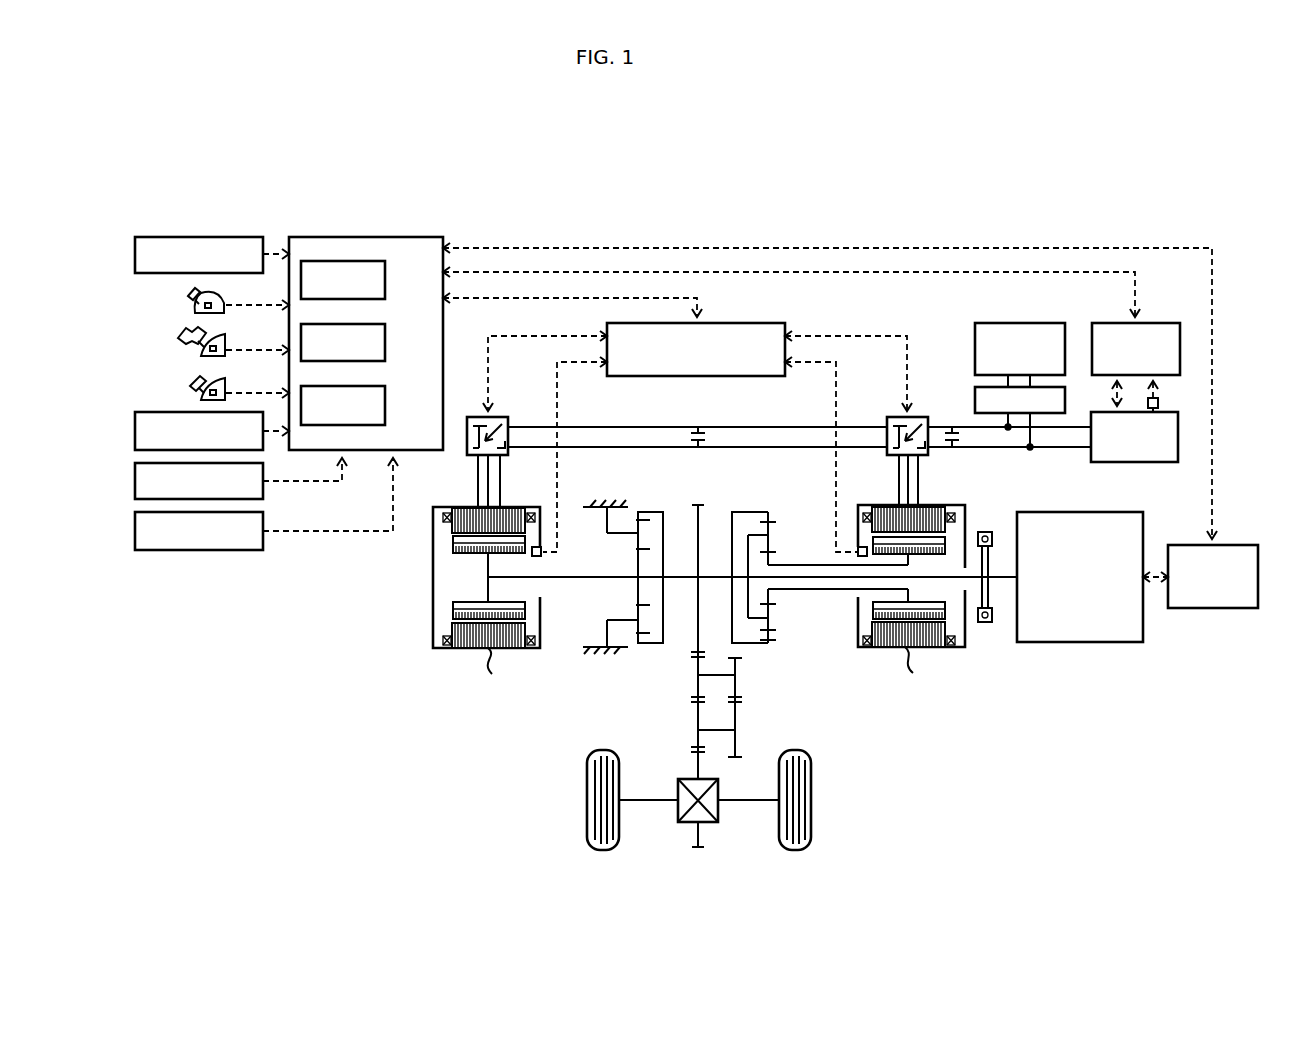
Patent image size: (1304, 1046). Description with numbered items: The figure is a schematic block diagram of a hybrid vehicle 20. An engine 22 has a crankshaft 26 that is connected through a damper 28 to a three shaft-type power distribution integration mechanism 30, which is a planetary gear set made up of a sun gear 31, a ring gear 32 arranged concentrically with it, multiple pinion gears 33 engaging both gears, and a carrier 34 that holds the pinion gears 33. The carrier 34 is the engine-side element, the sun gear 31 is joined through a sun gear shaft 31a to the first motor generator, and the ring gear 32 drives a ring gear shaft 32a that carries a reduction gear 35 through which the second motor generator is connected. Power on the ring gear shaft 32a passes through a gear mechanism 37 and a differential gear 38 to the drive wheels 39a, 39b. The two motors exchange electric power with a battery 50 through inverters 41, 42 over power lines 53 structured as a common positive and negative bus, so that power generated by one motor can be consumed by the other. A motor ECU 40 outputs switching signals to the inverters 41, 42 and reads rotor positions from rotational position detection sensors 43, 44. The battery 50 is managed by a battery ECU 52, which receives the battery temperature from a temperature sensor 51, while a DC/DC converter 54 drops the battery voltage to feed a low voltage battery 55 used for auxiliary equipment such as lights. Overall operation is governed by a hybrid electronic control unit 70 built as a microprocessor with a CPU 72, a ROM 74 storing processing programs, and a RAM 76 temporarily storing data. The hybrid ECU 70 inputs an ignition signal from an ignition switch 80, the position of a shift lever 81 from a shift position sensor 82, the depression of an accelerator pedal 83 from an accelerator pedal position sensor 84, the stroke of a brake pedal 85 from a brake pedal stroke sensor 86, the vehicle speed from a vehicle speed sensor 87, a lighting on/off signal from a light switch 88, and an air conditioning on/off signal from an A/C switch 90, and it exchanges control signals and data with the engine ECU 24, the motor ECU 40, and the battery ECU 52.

The hybrid vehicle 20 is at (934, 210).
The engine 22 is at (1118, 642).
The engine ECU 24 is at (1248, 545).
The crankshaft 26 is at (1003, 577).
The damper 28 is at (984, 622).
The power distribution integration mechanism 30 is at (820, 569).
The sun gear 31 is at (770, 602).
The sun gear shaft 31a is at (782, 565).
The ring gear 32 is at (770, 640).
The ring gear shaft 32a is at (696, 572).
The pinion gears 33 is at (770, 627).
The carrier 34 is at (748, 533).
The reduction gear 35 is at (656, 651).
The gear mechanism 37 is at (746, 704).
The differential gear 38 is at (714, 822).
The drive wheel 39a is at (587, 800).
The drive wheel 39b is at (811, 800).
The motor ECU 40 is at (780, 323).
The inverter 41 is at (893, 417).
The inverter 42 is at (500, 417).
The rotational position detection sensor 43 is at (862, 556).
The rotational position detection sensor 44 is at (537, 547).
The battery 50 is at (1160, 462).
The temperature sensor 51 is at (1158, 403).
The battery ECU 52 is at (1160, 323).
The power lines 53 is at (757, 445).
The DC/DC converter 54 is at (975, 395).
The low voltage battery 55 is at (1060, 323).
The hybrid electronic control unit 70 is at (370, 237).
The CPU 72 is at (386, 279).
The ROM 74 is at (386, 342).
The RAM 76 is at (386, 405).
The ignition switch 80 is at (135, 254).
The shift lever 81 is at (190, 294).
The shift position sensor 82 is at (195, 307).
The accelerator pedal 83 is at (178, 332).
The accelerator pedal position sensor 84 is at (200, 351).
The brake pedal 85 is at (190, 378).
The brake pedal stroke sensor 86 is at (200, 395).
The vehicle speed sensor 87 is at (135, 431).
The light switch 88 is at (135, 483).
The A/C switch 90 is at (135, 535).